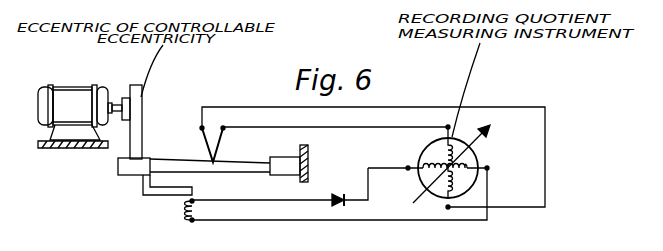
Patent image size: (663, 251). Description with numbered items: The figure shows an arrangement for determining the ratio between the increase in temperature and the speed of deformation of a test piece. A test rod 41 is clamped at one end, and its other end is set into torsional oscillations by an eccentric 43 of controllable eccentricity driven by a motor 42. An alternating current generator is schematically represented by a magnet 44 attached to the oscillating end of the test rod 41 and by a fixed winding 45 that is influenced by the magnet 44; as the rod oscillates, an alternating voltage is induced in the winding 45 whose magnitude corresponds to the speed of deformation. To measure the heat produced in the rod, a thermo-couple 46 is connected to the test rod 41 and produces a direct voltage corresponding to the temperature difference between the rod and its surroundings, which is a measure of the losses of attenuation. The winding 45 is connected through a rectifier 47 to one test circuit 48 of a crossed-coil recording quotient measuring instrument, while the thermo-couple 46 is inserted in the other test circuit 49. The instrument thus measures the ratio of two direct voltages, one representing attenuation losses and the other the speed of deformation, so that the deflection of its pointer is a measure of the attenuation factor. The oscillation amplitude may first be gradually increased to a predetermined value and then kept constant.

The test rod 41 is at (251, 166).
The motor 42 is at (70, 92).
The eccentric 43 is at (141, 103).
The magnet 44 is at (157, 190).
The fixed winding 45 is at (183, 218).
The thermo-couple 46 is at (200, 138).
The rectifier 47 is at (342, 196).
The test circuit 48 is at (472, 153).
The test circuit 49 is at (422, 151).